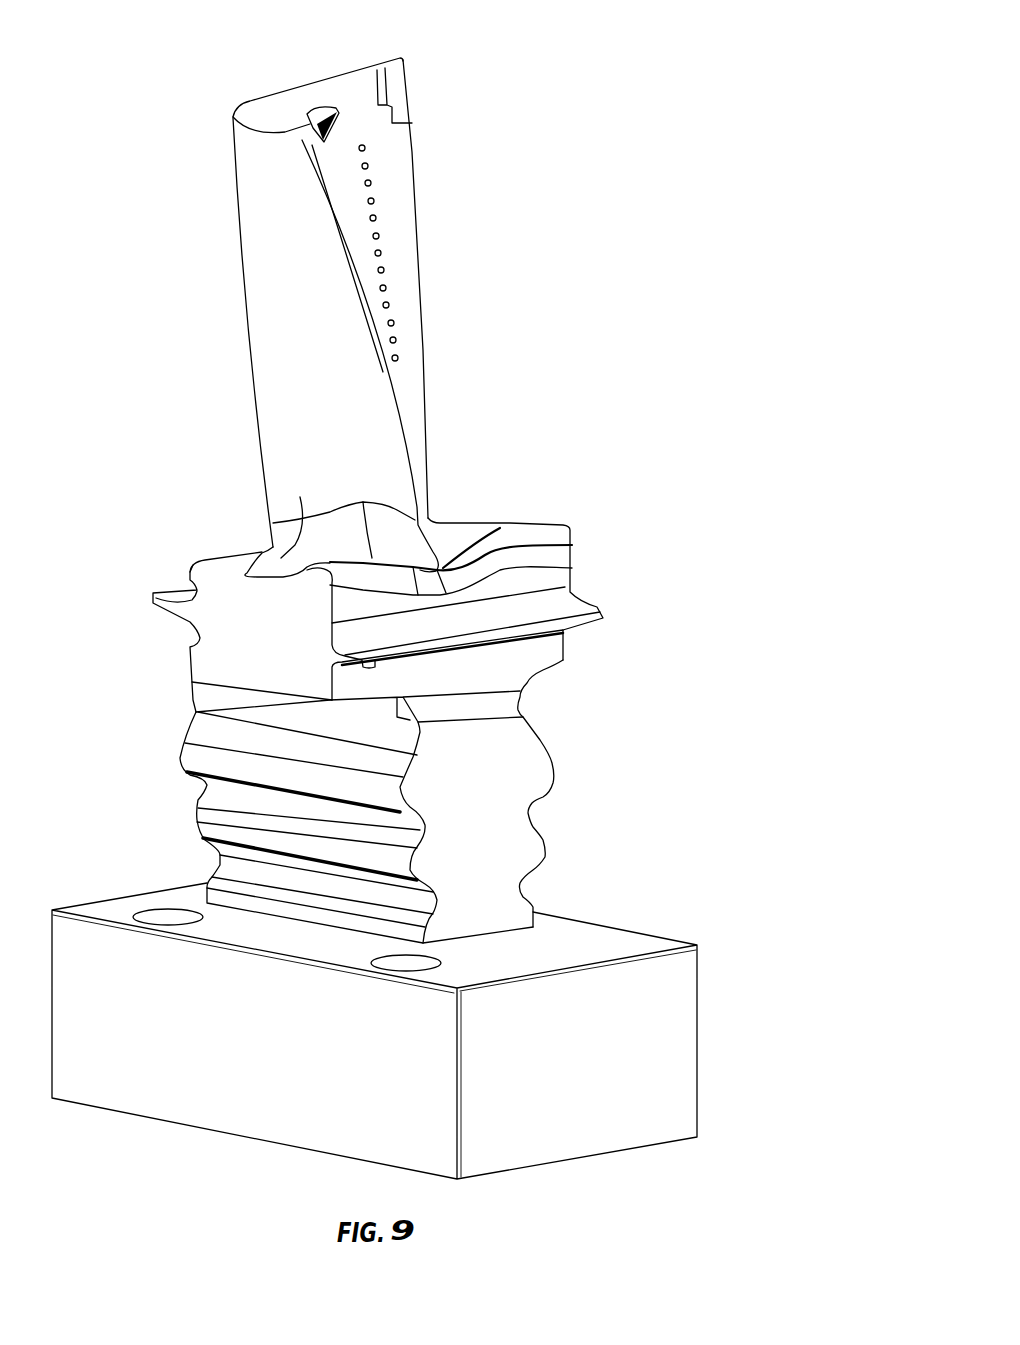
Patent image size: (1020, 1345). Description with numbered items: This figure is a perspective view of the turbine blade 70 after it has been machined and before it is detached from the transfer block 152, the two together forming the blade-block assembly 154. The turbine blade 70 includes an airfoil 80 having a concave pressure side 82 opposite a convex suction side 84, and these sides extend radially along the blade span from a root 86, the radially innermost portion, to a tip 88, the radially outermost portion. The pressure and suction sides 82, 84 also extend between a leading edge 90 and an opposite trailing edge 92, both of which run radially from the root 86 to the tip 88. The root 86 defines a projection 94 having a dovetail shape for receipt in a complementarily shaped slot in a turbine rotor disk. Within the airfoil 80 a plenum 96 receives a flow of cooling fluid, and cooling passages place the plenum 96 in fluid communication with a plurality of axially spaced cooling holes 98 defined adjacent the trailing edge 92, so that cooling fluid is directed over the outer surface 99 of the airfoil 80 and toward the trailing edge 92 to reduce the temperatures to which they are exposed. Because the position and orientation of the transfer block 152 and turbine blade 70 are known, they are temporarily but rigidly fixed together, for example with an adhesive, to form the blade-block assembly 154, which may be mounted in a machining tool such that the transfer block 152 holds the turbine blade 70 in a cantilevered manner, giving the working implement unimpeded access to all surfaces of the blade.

The turbine blade 70 is at (282, 222).
The airfoil 80 is at (340, 275).
The pressure side 82 is at (369, 118).
The suction side 84 is at (228, 121).
The root 86 is at (369, 801).
The tip 88 is at (258, 95).
The leading edge 90 is at (238, 272).
The trailing edge 92 is at (430, 331).
The projection 94 is at (433, 795).
The plenum 96 is at (296, 342).
The cooling holes 98 is at (410, 202).
The outer surface 99 is at (280, 183).
The transfer block 152 is at (608, 1137).
The blade-block assembly 154 is at (642, 274).